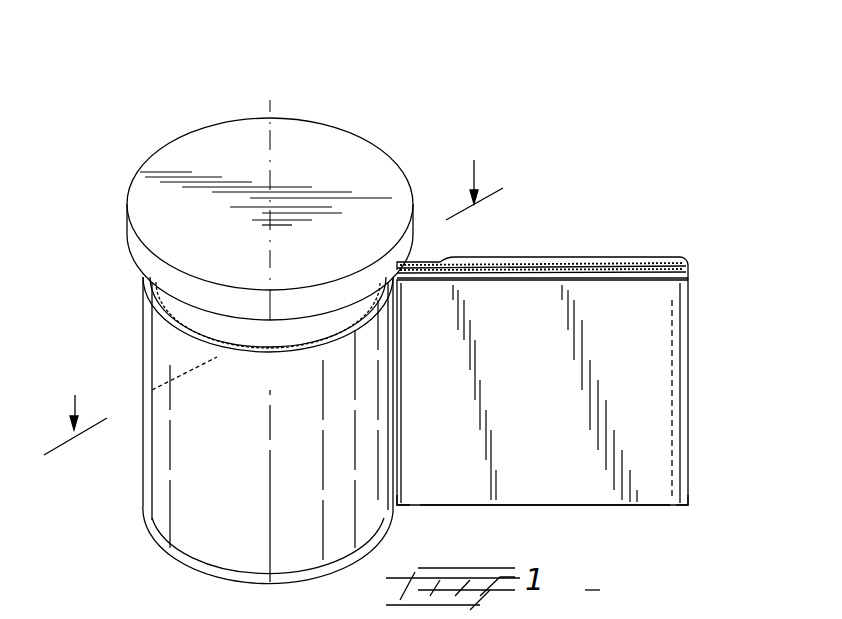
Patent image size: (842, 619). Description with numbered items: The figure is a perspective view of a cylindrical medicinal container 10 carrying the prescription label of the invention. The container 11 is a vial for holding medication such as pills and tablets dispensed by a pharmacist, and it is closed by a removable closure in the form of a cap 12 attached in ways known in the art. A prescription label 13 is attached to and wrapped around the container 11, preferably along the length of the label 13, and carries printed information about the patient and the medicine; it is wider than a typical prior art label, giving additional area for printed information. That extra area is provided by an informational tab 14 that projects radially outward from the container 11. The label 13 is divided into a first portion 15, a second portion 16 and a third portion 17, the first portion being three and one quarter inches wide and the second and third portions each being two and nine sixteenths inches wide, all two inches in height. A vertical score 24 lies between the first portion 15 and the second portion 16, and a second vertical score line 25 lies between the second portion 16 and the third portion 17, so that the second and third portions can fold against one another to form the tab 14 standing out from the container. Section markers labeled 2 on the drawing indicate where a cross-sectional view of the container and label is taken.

The cylindrical medicinal container 10 is at (339, 117).
The container 11 is at (198, 318).
The cap 12 is at (127, 200).
The prescription label 13 is at (558, 232).
The informational tab 14 is at (560, 505).
The first portion 15 is at (228, 437).
The second portion 16 is at (526, 394).
The third portion 17 is at (492, 258).
The vertical score 24 is at (397, 506).
The second vertical score line 25 is at (688, 506).
The section line of FIG. 2 is at (273, 281).